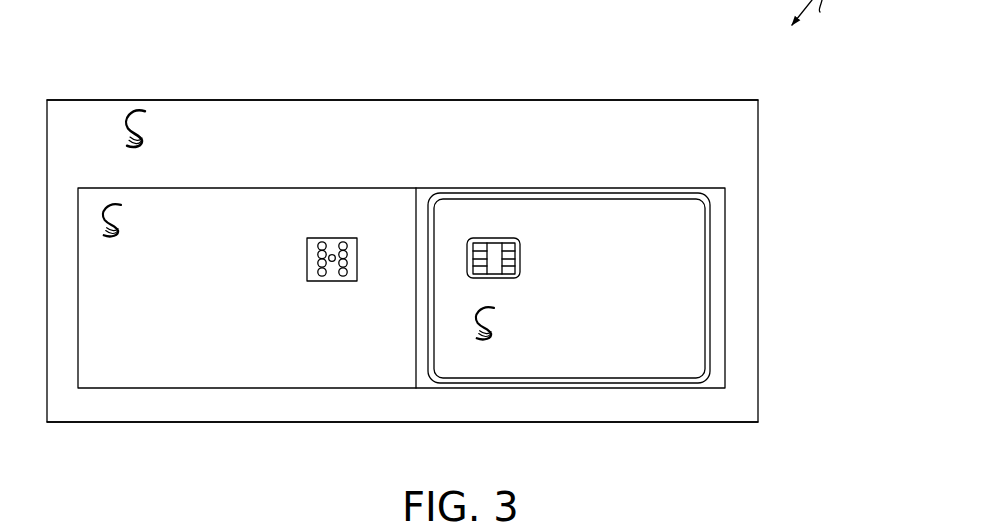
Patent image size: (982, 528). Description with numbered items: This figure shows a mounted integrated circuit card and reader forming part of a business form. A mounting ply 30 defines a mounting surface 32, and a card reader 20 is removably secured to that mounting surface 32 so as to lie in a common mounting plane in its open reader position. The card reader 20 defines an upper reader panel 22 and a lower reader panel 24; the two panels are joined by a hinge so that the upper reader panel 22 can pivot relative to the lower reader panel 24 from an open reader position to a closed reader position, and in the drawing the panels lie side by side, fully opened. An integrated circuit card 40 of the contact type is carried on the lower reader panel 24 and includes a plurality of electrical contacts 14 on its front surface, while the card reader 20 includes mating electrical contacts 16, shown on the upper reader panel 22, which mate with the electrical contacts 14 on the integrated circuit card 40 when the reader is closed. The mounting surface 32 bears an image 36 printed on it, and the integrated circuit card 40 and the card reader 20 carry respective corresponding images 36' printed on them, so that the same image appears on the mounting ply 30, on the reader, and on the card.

The card reader 20 is at (77, 388).
The mounting ply 30 is at (710, 413).
The mounting surface 32 is at (537, 151).
The upper reader panel 22 is at (352, 192).
The lower reader panel 24 is at (627, 191).
The integrated circuit card 40 is at (445, 353).
The electrical contacts 14 is at (541, 249).
The mating electrical contacts 16 is at (296, 290).
The image 36 is at (217, 83).
The corresponding images 36' is at (396, 281).